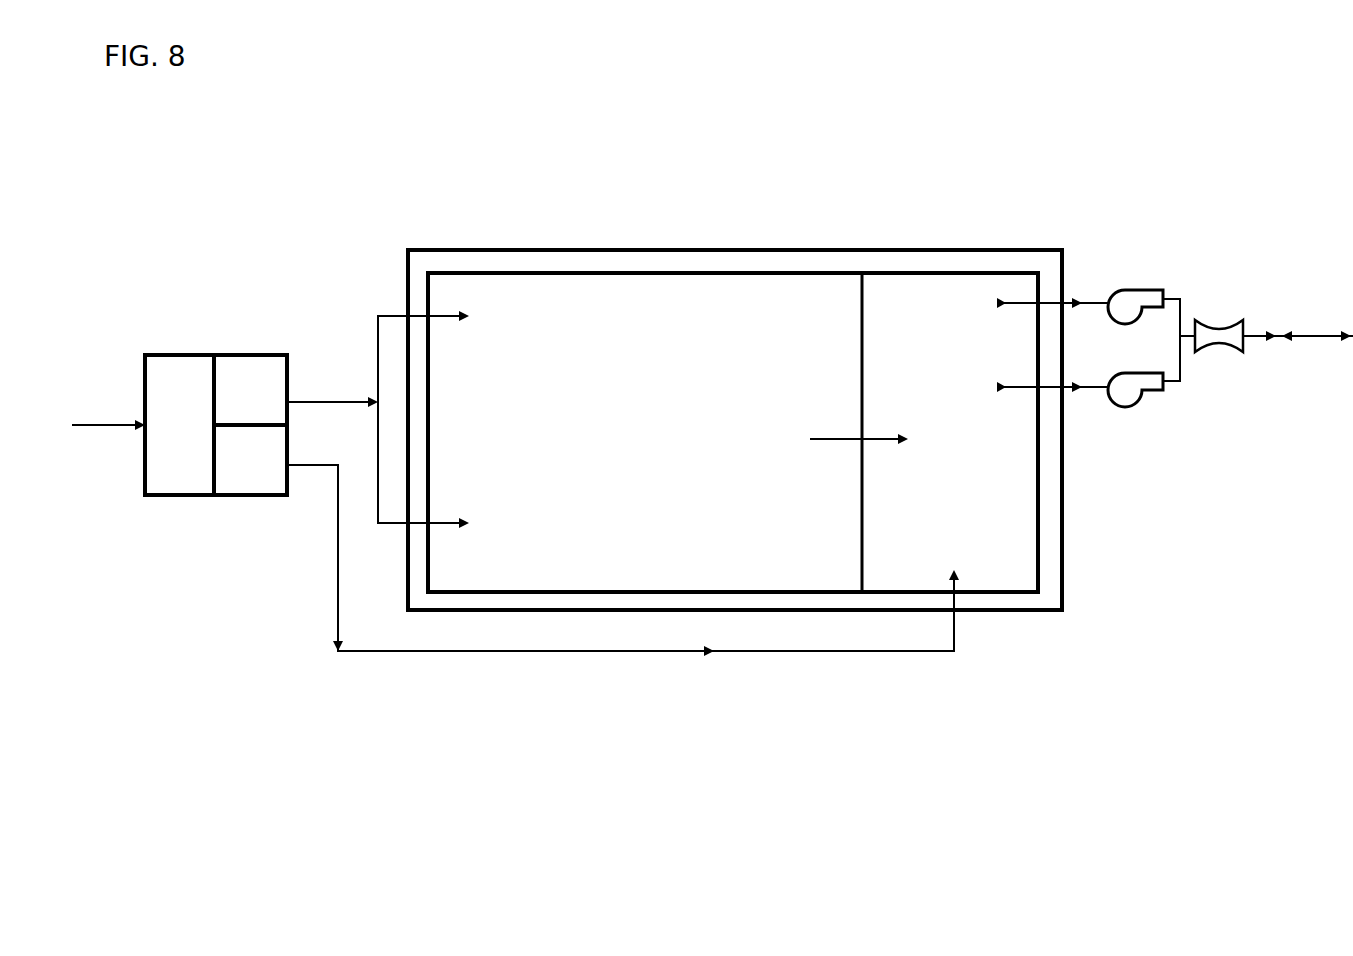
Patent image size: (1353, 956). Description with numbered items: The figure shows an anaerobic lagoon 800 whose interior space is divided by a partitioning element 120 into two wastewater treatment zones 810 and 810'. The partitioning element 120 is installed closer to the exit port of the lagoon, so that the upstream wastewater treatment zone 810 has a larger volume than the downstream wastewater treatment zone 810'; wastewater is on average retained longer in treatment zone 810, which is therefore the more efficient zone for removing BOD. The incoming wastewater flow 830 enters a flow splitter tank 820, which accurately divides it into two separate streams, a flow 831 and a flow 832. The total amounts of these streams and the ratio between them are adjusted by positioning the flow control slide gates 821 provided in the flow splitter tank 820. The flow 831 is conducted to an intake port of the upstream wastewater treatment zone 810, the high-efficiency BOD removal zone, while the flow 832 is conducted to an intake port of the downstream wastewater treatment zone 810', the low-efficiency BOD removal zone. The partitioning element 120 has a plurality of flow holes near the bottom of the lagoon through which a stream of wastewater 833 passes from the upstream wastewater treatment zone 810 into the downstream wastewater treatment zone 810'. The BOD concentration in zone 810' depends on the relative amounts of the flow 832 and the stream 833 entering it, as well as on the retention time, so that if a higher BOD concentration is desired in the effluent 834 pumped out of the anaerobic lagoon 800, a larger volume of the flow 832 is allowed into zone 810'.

The anaerobic lagoon 800 is at (711, 225).
The upstream wastewater treatment zone 810 is at (627, 355).
The downstream wastewater treatment zone 810' is at (928, 368).
The partitioning element 120 is at (865, 502).
The flow splitter tank 820 is at (182, 497).
The flow control slide gates 821 is at (213, 453).
The incoming wastewater flow 830 is at (95, 406).
The flow to upstream treatment zone 831 is at (378, 419).
The flow to downstream treatment zone 832 is at (623, 590).
The stream of wastewater through partitioning element 833 is at (850, 423).
The effluent 834 is at (1175, 337).